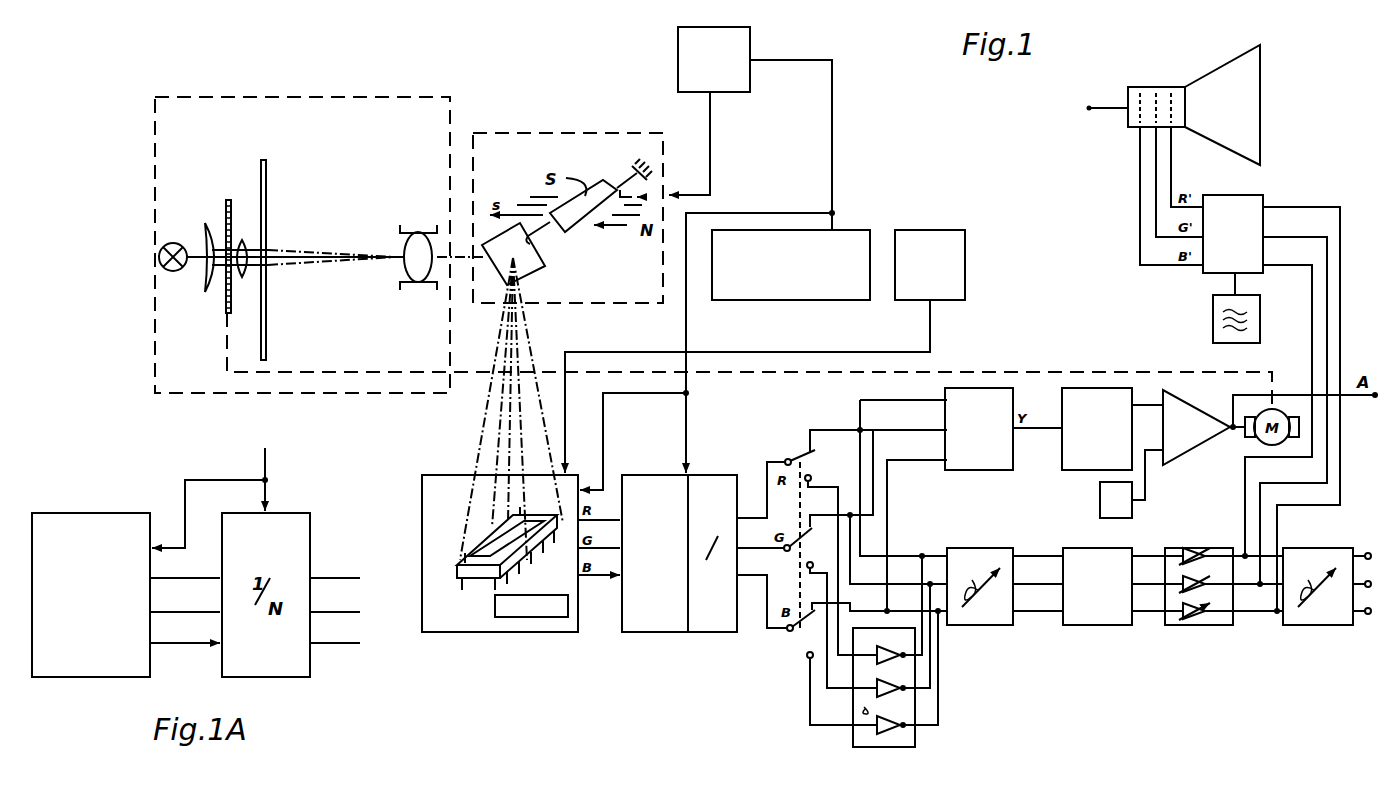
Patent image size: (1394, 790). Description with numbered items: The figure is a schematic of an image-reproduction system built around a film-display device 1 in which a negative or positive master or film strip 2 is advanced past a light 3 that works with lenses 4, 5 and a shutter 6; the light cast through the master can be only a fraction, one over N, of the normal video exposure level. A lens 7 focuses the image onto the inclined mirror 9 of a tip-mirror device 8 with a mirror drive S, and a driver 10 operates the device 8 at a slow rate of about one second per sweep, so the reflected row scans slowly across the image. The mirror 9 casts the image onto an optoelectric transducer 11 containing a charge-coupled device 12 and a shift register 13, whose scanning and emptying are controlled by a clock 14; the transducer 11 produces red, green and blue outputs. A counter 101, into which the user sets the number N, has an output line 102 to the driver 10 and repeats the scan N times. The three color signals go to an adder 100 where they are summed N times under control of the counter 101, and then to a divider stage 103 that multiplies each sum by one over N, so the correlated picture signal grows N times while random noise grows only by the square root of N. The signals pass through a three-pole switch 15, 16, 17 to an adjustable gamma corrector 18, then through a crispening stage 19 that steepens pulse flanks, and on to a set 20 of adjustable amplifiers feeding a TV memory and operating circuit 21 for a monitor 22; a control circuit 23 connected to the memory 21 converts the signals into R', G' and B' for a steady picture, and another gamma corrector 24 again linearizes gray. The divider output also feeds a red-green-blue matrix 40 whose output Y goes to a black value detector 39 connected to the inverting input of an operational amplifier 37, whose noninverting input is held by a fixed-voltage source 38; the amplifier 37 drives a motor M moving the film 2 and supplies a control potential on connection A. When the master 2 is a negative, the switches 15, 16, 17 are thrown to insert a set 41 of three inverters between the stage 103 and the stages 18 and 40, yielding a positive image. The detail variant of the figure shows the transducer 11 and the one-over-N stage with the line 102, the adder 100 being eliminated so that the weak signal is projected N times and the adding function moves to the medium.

In FIG. 1, the film-display device 1 is at (450, 108).
In FIG. 1, the master or film strip 2 is at (267, 186).
In FIG. 1, the light 3 is at (173, 243).
In FIG. 1, the lens 4 is at (206, 238).
In FIG. 1, the lens 5 is at (239, 238).
In FIG. 1, the shutter 6 is at (229, 200).
In FIG. 1, the lens 7 is at (403, 247).
In FIG. 1, the tip-mirror device 8 is at (530, 145).
In FIG. 1, the inclined mirror 9 is at (531, 266).
In FIG. 1, the driver 10 is at (682, 82).
In FIG. 1, the optoelectric transducer 11 is at (441, 478).
In FIG. 1A, the optoelectric transducer 11 is at (80, 513).
In FIG. 1, the charge-coupled device 12 is at (472, 560).
In FIG. 1, the shift register 13 is at (543, 597).
In FIG. 1, the clock 14 is at (958, 232).
In FIG. 1, the switch 15 is at (790, 458).
In FIG. 1, the switch 16 is at (788, 522).
In FIG. 1, the switch 17 is at (797, 638).
In FIG. 1, the adjustable gamma corrector 18 is at (967, 553).
In FIG. 1, the crispening stage 19 is at (1085, 553).
In FIG. 1, the set of adjustable amplifiers 20 is at (1166, 550).
In FIG. 1, the TV memory and operating circuit 21 is at (1260, 200).
In FIG. 1, the monitor 22 is at (1257, 75).
In FIG. 1, the control circuit 23 is at (1258, 302).
In FIG. 1, the gamma corrector 24 is at (1318, 553).
In FIG. 1, the operational amplifier 37 is at (1182, 400).
In FIG. 1, the source of fixed voltage 38 is at (1100, 489).
In FIG. 1, the black value detector 39 is at (1124, 395).
In FIG. 1, the red-green-blue matrix 40 is at (1005, 395).
In FIG. 1, the set of inverters 41 is at (855, 737).
In FIG. 1, the adder 100 is at (661, 480).
In FIG. 1, the counter 101 is at (858, 243).
In FIG. 1, the output line 102 is at (836, 101).
In FIG. 1A, the output line 102 is at (268, 462).
In FIG. 1, the divider stage 103 is at (728, 485).